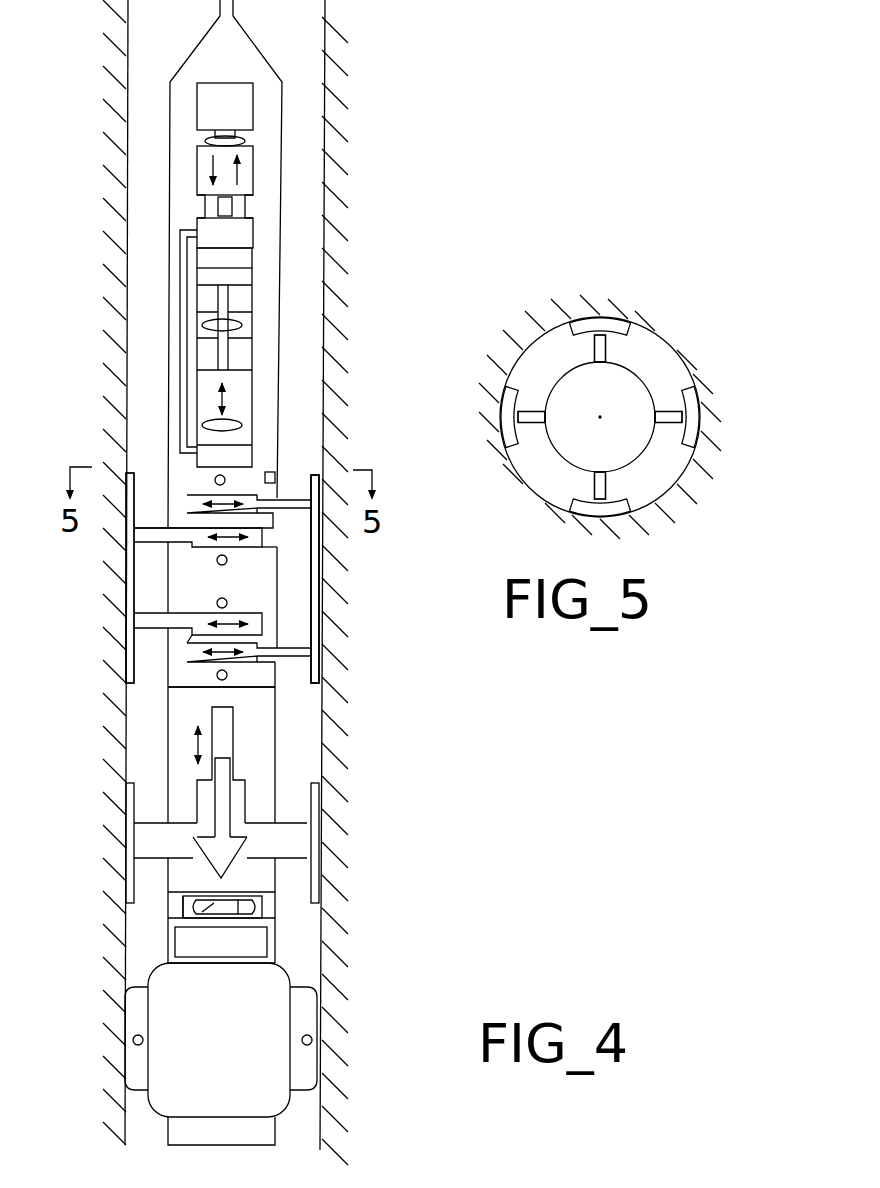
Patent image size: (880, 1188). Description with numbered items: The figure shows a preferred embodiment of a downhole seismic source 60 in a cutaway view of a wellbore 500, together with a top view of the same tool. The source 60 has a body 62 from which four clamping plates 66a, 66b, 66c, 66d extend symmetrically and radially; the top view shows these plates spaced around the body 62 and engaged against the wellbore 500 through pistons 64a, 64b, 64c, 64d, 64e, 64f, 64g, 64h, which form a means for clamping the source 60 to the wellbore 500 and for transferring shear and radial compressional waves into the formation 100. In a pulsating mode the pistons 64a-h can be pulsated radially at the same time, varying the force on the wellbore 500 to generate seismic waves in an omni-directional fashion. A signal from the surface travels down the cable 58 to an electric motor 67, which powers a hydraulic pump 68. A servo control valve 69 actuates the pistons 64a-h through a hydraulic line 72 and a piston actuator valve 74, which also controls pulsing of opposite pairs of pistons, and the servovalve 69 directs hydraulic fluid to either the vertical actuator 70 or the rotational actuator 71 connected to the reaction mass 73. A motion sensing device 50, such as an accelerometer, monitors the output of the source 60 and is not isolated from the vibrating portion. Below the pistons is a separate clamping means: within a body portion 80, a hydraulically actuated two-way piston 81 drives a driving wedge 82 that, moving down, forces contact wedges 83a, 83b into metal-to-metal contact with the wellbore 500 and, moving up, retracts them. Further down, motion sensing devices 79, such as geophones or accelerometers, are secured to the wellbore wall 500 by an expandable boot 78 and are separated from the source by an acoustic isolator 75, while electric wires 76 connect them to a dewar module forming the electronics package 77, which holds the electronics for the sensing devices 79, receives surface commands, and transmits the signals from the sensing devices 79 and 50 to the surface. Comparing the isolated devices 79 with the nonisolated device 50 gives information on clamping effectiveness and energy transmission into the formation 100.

In FIG. 4, the motion sensing device 50 is at (272, 478).
In FIG. 4, the cable 58 is at (218, 8).
In FIG. 4, the downhole seismic source 60 is at (422, 91).
In FIG. 4, the body 62 is at (257, 47).
In FIG. 5, the body 62 is at (556, 458).
In FIG. 4, the piston 64a is at (152, 540).
In FIG. 5, the piston 64a is at (540, 405).
In FIG. 4, the piston 64b is at (152, 627).
In FIG. 5, the piston 64b is at (511, 357).
In FIG. 5, the piston 64c is at (668, 430).
In FIG. 4, the piston 64d is at (283, 648).
In FIG. 5, the piston 64d is at (712, 478).
In FIG. 4, the piston 64e is at (242, 490).
In FIG. 5, the piston 64e is at (590, 495).
In FIG. 4, the piston 64f is at (219, 599).
In FIG. 5, the piston 64f is at (580, 521).
In FIG. 4, the piston 64g is at (227, 561).
In FIG. 5, the piston 64g is at (615, 347).
In FIG. 4, the piston 64h is at (228, 675).
In FIG. 5, the piston 64h is at (675, 323).
In FIG. 4, the clamping plate 66a is at (128, 470).
In FIG. 5, the clamping plate 66a is at (503, 400).
In FIG. 4, the clamping plate 66b is at (318, 475).
In FIG. 5, the clamping plate 66b is at (697, 405).
In FIG. 4, the clamping plate 66c is at (295, 510).
In FIG. 5, the clamping plate 66c is at (622, 518).
In FIG. 5, the clamping plate 66d is at (613, 318).
In FIG. 4, the electric motor 67 is at (243, 108).
In FIG. 4, the hydraulic pump 68 is at (253, 178).
In FIG. 4, the servo control valve 69 is at (253, 233).
In FIG. 4, the vertical actuator 70 is at (252, 258).
In FIG. 4, the rotational actuator 71 is at (252, 277).
In FIG. 4, the hydraulic line 72 is at (184, 302).
In FIG. 4, the reaction mass 73 is at (252, 397).
In FIG. 4, the piston actuator valve 74 is at (253, 455).
In FIG. 4, the acoustic isolator 75 is at (270, 908).
In FIG. 4, the electric wires 76 is at (183, 908).
In FIG. 4, the electronics package 77 is at (263, 943).
In FIG. 4, the expandable boot 78 is at (237, 1049).
In FIG. 4, the motion sensing device 79 is at (132, 1040).
In FIG. 4, the body portion 80 is at (178, 758).
In FIG. 4, the two-way piston 81 is at (222, 765).
In FIG. 4, the driving wedge 82 is at (202, 833).
In FIG. 4, the contact wedge 83a is at (147, 848).
In FIG. 4, the contact wedge 83b is at (303, 843).
In FIG. 4, the earth formation 100 is at (426, 156).
In FIG. 5, the earth formation 100 is at (761, 493).
In FIG. 4, the wellbore 500 is at (126, 384).
In FIG. 5, the wellbore 500 is at (530, 488).